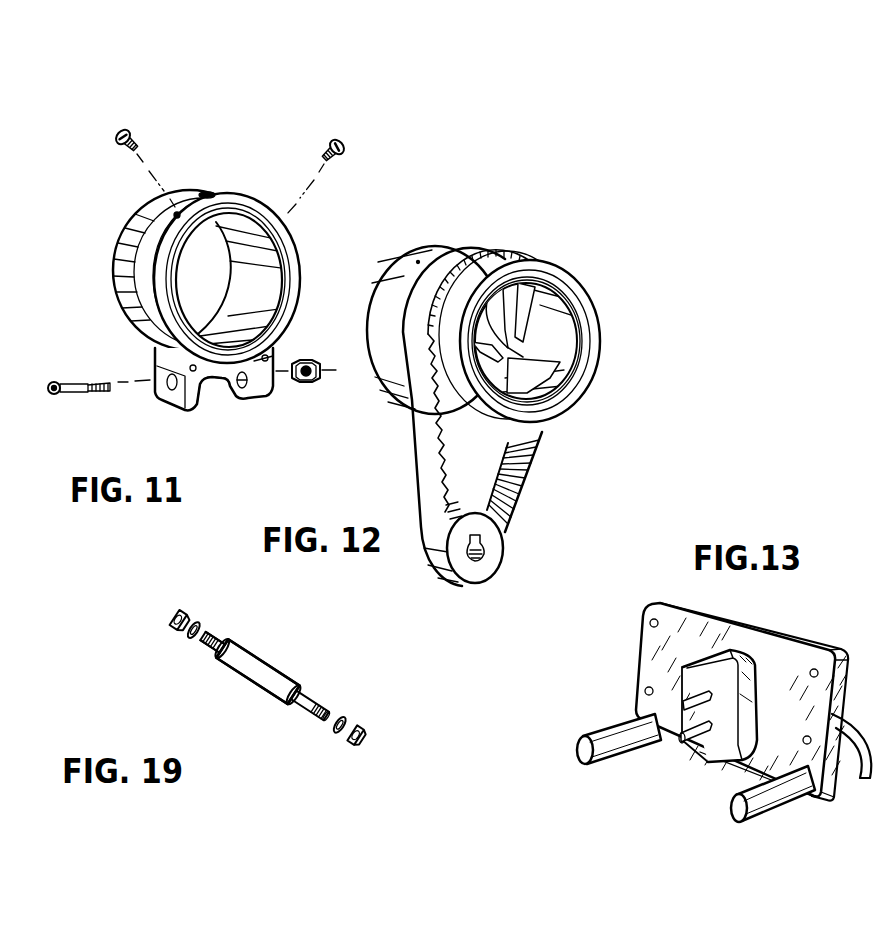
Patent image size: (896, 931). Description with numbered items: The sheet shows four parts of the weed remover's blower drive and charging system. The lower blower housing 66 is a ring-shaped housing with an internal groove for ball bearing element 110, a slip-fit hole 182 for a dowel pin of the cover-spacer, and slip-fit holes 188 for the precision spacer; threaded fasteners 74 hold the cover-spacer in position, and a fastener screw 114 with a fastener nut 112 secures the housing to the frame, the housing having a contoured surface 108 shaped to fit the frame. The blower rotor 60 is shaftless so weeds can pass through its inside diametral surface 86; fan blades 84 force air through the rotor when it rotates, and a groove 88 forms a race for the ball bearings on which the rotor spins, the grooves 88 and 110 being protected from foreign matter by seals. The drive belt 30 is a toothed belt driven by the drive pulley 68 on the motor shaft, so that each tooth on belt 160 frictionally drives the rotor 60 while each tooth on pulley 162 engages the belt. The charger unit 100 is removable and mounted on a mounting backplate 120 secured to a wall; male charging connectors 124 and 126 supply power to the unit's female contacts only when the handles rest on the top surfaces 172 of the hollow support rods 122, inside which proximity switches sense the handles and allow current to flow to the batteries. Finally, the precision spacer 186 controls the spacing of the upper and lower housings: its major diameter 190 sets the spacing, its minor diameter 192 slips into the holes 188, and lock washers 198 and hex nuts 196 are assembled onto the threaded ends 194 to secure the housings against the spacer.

In FIG. 12, the drive belt 30 is at (476, 417).
In FIG. 12, the blower rotor 60 is at (418, 261).
In FIG. 11, the lower blower housing 66 is at (173, 273).
In FIG. 12, the drive pulley 68 is at (478, 571).
In FIG. 11, the threaded fastener 74 is at (116, 143).
In FIG. 12, the fan blade 84 is at (542, 370).
In FIG. 12, the inside diametral surface of blower rotor 86 is at (560, 334).
In FIG. 12, the groove 88 is at (573, 291).
In FIG. 13, the charger unit 100 is at (730, 662).
In FIG. 11, the contoured surface 108 is at (215, 393).
In FIG. 11, the groove for ball bearing element 110 is at (243, 211).
In FIG. 11, the fastener nut 112 is at (306, 385).
In FIG. 11, the fastener screw 114 is at (77, 392).
In FIG. 13, the mounting backplate 120 is at (808, 650).
In FIG. 13, the support rod 122 is at (583, 740).
In FIG. 13, the charging connector 124 is at (696, 700).
In FIG. 13, the charging connector 126 is at (692, 738).
In FIG. 12, the tooth on belt 160 is at (530, 479).
In FIG. 12, the tooth on pulley 162 is at (448, 507).
In FIG. 13, the top surface of support rod 172 is at (689, 770).
In FIG. 11, the slip-fit hole 182 is at (207, 193).
In FIG. 19, the precision spacer 186 is at (240, 673).
In FIG. 11, the slip-fit hole 188 is at (190, 366).
In FIG. 19, the major diameter of spacer 190 is at (270, 700).
In FIG. 19, the minor diameter of spacer 192 is at (300, 718).
In FIG. 19, the threaded end of spacer 194 is at (203, 643).
In FIG. 19, the hex nut 196 is at (168, 618).
In FIG. 19, the lock washer 198 is at (183, 633).